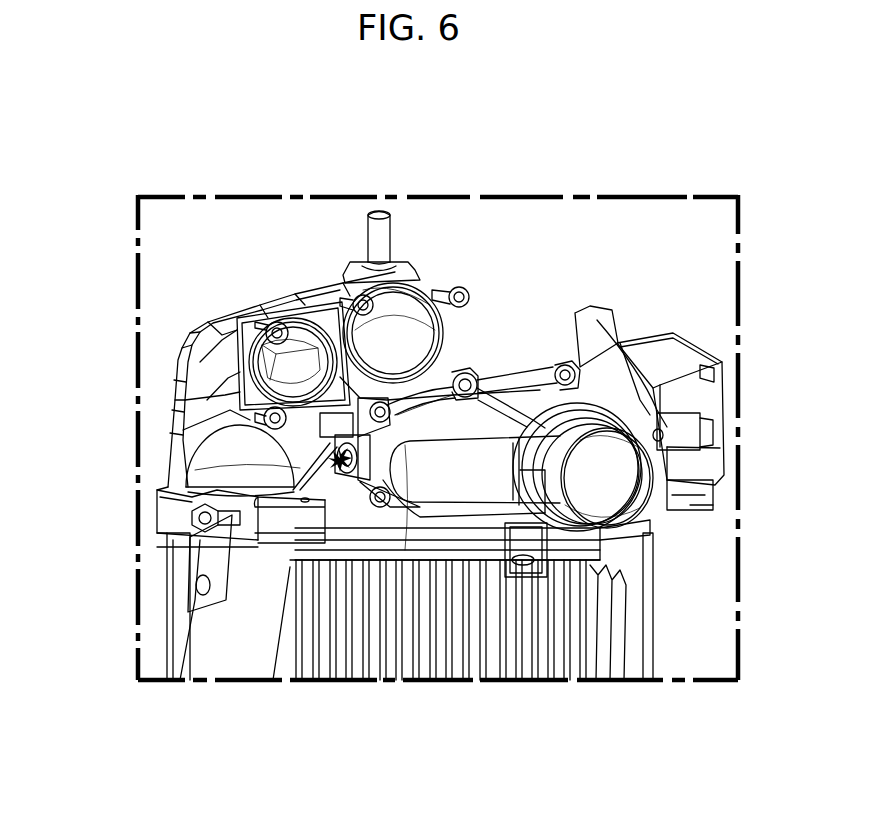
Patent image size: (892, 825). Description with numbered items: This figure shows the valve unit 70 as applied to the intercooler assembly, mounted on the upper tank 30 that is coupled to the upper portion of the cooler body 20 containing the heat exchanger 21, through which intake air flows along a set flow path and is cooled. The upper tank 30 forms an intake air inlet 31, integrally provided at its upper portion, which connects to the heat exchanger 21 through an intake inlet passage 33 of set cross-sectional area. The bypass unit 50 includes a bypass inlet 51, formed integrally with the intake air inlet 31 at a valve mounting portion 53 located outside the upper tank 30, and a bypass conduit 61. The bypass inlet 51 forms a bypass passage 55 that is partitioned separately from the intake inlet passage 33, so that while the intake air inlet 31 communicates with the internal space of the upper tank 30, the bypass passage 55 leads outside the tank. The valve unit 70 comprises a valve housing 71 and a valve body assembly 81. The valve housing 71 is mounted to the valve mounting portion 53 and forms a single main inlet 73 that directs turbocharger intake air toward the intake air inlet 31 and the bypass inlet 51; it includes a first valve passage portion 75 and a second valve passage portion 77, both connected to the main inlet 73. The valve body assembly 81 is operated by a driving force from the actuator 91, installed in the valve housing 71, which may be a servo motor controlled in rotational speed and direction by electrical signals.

The cooler body 20 is at (348, 676).
The heat exchanger 21 is at (407, 655).
The upper tank 30 is at (480, 556).
The intake air inlet 31 is at (437, 355).
The intake inlet passage 33 is at (404, 318).
The bypass unit 50 is at (160, 410).
The bypass inlet 51 is at (227, 322).
The valve mounting portion 53 is at (328, 312).
The bypass passage 55 is at (305, 332).
The bypass conduit 61 is at (235, 655).
The valve unit 70 is at (684, 339).
The valve housing 71 is at (498, 340).
The main inlet 73 is at (633, 500).
The first valve passage portion 75 is at (540, 402).
The second valve passage portion 77 is at (436, 420).
The valve body assembly 81 is at (330, 460).
The actuator 91 is at (703, 345).